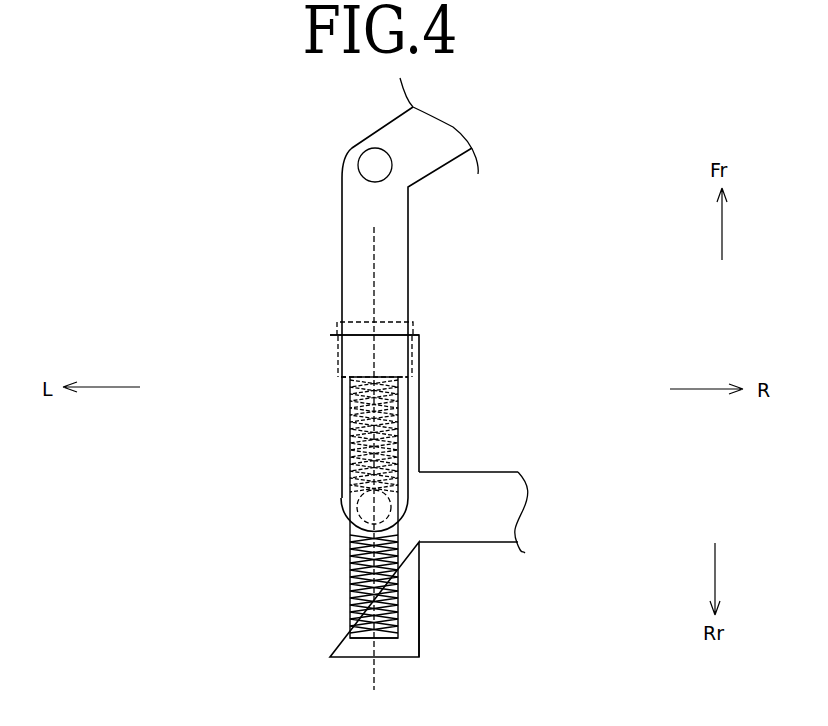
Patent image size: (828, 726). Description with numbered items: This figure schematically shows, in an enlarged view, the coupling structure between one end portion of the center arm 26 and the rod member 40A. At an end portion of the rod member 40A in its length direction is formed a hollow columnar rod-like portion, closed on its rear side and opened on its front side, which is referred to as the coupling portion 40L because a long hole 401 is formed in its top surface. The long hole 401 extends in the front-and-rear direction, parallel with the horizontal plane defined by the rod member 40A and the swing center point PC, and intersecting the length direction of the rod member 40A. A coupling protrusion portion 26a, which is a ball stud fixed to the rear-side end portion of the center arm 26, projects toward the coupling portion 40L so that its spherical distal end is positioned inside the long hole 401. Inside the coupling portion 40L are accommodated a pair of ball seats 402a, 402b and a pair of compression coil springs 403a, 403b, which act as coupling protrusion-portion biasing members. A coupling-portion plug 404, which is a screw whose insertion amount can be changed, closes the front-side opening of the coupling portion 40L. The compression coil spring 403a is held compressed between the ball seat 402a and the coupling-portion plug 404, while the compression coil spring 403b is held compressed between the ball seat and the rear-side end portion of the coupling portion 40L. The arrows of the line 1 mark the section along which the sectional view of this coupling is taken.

The center arm 26 is at (408, 292).
The coupling protrusion portion 26a is at (345, 498).
The swing center point PC is at (373, 164).
The long hole 401 is at (420, 627).
The ball seat 402a is at (335, 492).
The ball seat 402b is at (345, 523).
The compression coil spring 403a is at (337, 395).
The compression coil spring 403b is at (398, 612).
The coupling-portion plug 404 is at (333, 333).
The rod member 40A is at (497, 472).
The coupling portion 40L is at (419, 593).
The section line 1 is at (362, 249).